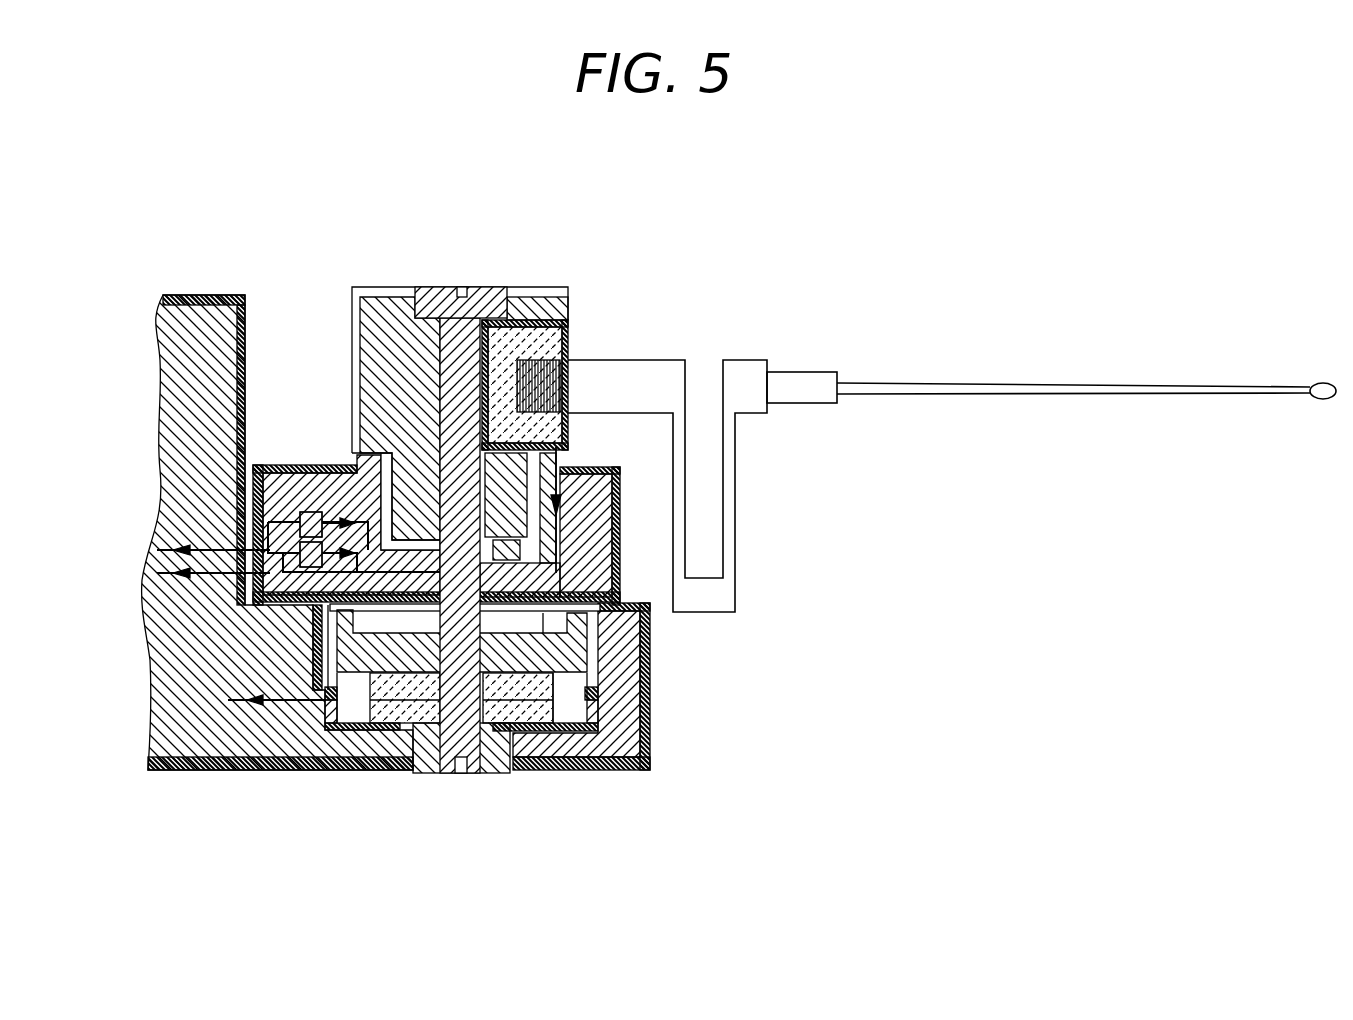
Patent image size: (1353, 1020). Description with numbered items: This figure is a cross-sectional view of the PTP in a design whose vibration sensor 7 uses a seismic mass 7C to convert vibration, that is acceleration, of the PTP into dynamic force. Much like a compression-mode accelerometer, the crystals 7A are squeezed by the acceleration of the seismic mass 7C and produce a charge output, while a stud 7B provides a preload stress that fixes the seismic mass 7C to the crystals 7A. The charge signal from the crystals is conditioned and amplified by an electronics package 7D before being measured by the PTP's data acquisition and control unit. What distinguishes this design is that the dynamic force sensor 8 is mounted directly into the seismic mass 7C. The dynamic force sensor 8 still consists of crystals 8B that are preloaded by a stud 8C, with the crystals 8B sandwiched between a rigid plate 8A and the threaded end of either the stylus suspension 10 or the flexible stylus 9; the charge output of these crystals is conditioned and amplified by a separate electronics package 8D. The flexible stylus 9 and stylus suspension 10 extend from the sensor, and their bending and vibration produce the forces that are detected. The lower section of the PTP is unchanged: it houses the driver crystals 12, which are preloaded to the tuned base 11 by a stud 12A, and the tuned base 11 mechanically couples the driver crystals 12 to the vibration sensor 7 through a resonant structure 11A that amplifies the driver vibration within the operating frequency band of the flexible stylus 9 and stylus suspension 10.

The vibration sensor 7 is at (178, 212).
The crystals 7A is at (418, 530).
The stud 7B is at (438, 287).
The seismic mass 7C is at (392, 302).
The electronics package 7D is at (300, 515).
The dynamic force sensor 8 is at (770, 178).
The rigid plate 8A is at (507, 290).
The crystals 8B is at (543, 318).
The stud 8C is at (568, 358).
The electronics package 8D is at (300, 613).
The flexible stylus 9 is at (1146, 340).
The stylus suspension 10 is at (795, 512).
The tuned base 11 is at (565, 805).
The resonant structure 11A is at (562, 652).
The driver crystals 12 is at (388, 740).
The stud 12A is at (480, 773).